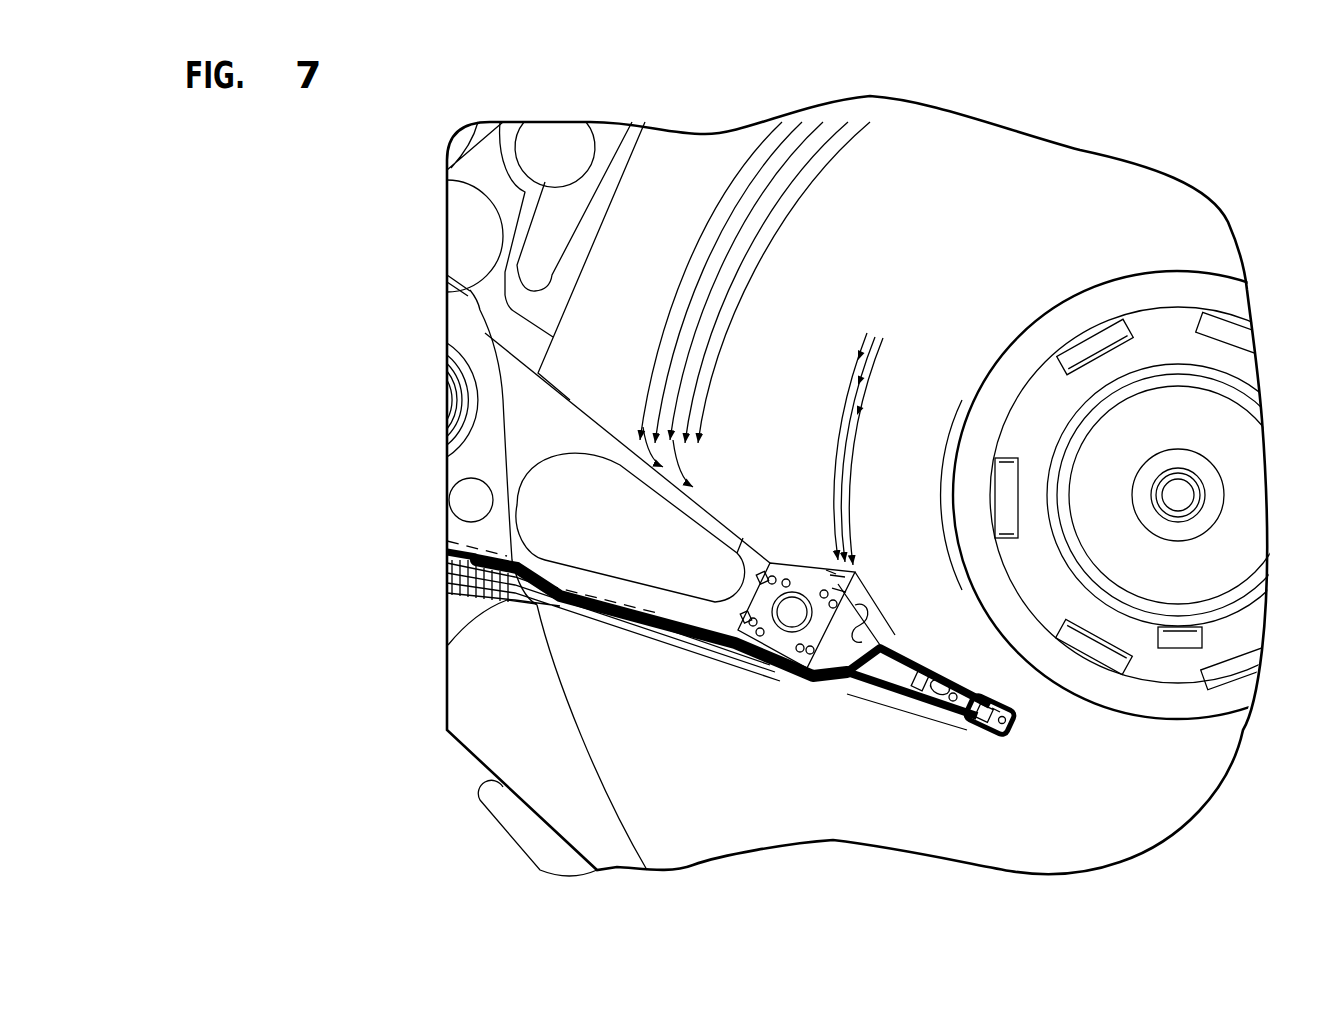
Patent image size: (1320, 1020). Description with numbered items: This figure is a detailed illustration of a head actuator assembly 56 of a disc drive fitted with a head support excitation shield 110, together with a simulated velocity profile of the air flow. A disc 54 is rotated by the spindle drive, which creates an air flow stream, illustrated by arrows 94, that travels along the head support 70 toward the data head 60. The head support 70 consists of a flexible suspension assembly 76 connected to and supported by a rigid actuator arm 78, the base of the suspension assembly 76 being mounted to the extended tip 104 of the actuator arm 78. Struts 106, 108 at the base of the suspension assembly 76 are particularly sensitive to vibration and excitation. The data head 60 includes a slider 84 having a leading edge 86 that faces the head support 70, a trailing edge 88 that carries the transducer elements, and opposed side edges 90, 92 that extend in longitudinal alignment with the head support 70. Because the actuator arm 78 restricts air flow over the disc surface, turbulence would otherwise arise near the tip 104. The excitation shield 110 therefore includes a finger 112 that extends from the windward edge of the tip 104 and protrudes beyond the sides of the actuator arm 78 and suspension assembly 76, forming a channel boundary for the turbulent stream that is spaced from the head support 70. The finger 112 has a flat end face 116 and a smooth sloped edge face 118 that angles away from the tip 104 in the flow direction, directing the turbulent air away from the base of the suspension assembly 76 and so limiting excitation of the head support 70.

The disc 54 is at (950, 463).
The head actuator assembly 56 is at (458, 313).
The data head 60 is at (1028, 716).
The head support 70 is at (912, 632).
The suspension assembly 76 is at (907, 681).
The actuator arm 78 is at (610, 597).
The slider 84 is at (1013, 730).
The leading edge 86 is at (985, 708).
The trailing edge 88 is at (1005, 733).
The side edge 90 is at (996, 713).
The side edge 92 is at (977, 703).
The arrows 94 is at (853, 428).
The tip 104 is at (747, 667).
The strut 106 is at (810, 693).
The strut 108 is at (857, 613).
The head support excitation shield 110 is at (866, 560).
The finger 112 is at (837, 583).
The flat end face 116 is at (836, 588).
The sloped edge face 118 is at (830, 573).